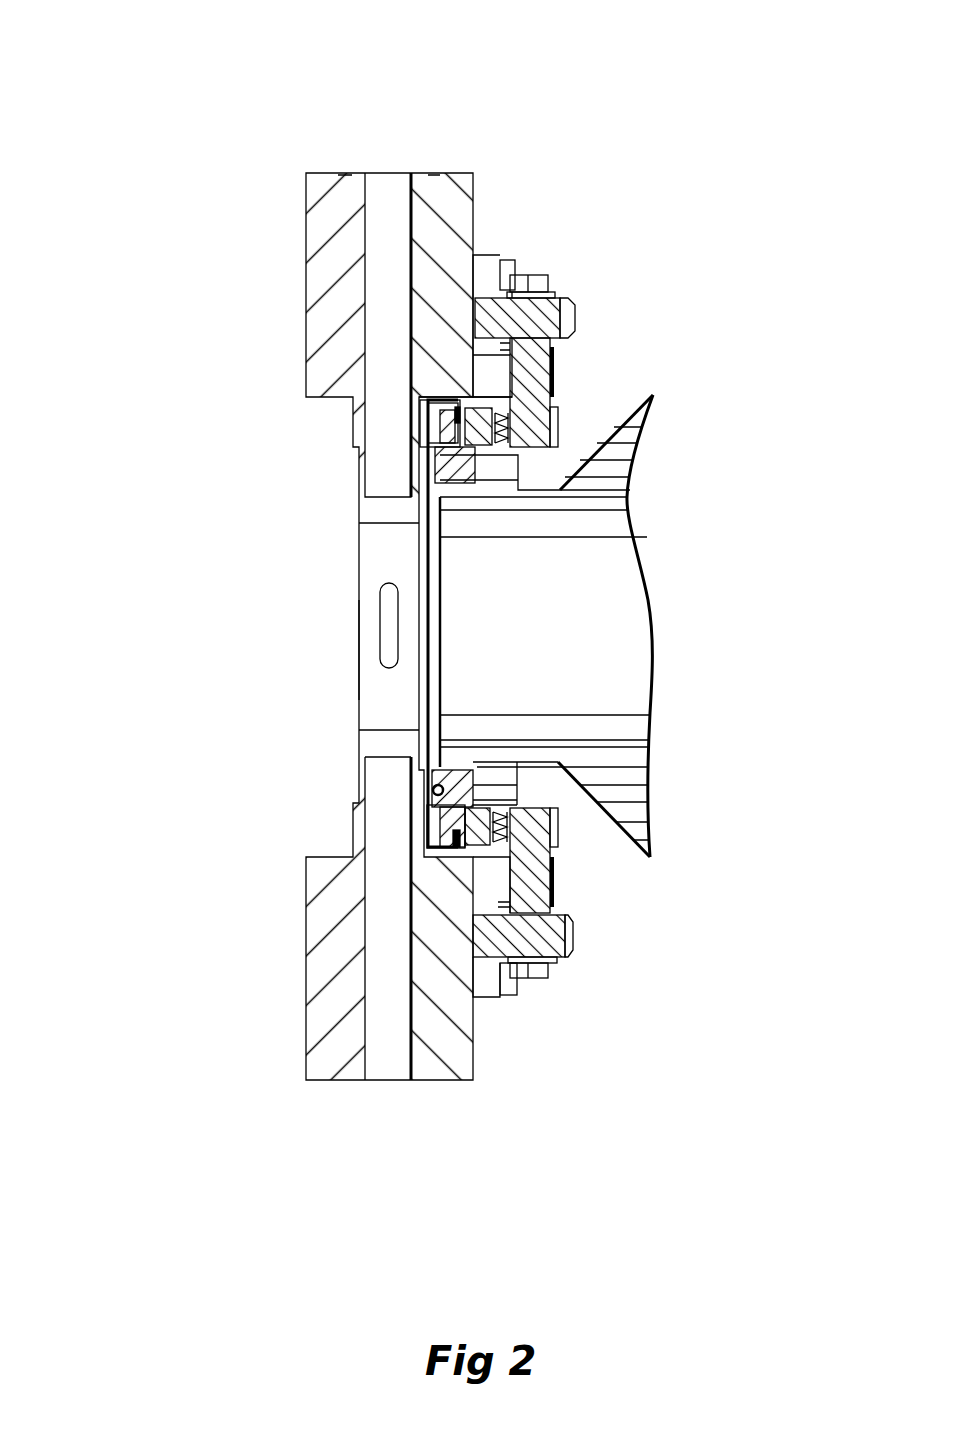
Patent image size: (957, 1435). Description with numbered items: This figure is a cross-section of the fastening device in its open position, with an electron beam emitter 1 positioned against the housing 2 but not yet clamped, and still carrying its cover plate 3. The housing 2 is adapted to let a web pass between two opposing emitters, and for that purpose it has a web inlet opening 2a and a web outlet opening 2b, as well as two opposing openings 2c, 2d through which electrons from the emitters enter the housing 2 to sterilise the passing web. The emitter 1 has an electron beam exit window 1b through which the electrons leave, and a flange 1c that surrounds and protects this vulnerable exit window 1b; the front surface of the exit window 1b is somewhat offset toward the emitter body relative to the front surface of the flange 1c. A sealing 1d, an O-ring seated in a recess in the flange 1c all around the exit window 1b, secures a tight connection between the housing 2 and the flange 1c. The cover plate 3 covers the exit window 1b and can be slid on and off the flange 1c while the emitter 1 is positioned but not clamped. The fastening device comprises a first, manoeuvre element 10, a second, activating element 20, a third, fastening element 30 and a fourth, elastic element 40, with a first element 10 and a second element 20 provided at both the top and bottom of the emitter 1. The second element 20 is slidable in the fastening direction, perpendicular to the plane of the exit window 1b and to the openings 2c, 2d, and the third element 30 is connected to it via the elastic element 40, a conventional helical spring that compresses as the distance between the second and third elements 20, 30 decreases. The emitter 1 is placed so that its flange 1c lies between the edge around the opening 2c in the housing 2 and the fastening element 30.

The electron beam emitter 1 is at (577, 553).
The electron beam exit window 1b is at (440, 603).
The flange 1c is at (442, 845).
The sealing 1d is at (433, 790).
The housing 2 is at (318, 250).
The web inlet opening 2a is at (383, 1053).
The web outlet opening 2b is at (388, 205).
The opening 2c is at (418, 562).
The opening 2d is at (357, 668).
The cover plate 3 is at (430, 635).
The first element 10 is at (538, 317).
The second element 20 is at (512, 447).
The third element 30 is at (463, 433).
The fourth element 40 is at (553, 380).